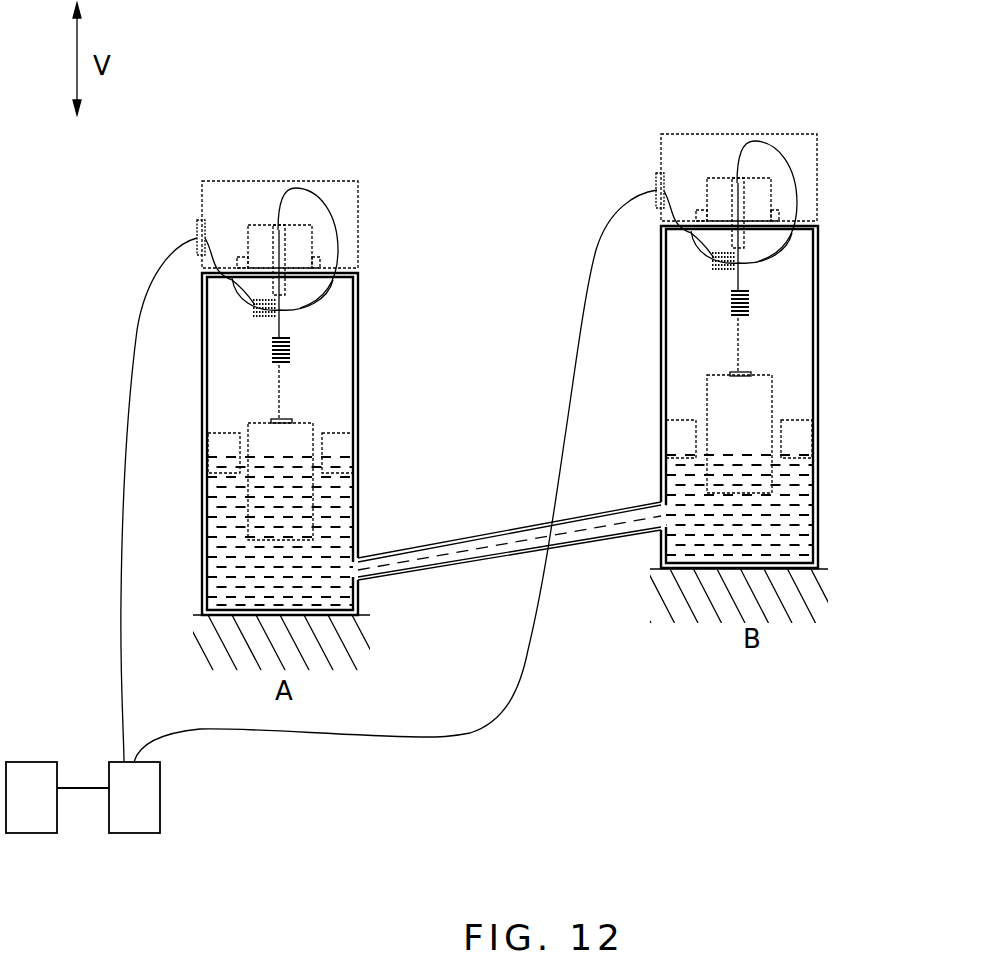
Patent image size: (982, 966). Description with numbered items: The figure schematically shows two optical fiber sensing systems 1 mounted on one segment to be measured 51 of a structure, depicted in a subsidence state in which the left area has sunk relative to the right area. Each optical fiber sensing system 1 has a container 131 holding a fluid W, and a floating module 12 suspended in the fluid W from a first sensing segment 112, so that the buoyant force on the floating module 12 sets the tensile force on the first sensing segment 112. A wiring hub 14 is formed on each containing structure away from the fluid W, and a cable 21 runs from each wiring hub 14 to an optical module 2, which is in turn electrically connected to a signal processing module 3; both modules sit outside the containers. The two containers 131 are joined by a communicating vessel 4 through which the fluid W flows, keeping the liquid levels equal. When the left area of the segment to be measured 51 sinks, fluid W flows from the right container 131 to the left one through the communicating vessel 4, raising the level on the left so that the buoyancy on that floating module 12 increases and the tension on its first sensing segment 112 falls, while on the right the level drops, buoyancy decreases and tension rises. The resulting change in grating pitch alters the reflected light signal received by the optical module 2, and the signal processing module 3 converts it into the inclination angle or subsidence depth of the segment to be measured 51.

The optical fiber sensing system 1 is at (262, 108).
The container 131 is at (358, 343).
The segment to be measured 51 is at (830, 600).
The wiring hub 14 is at (197, 228).
The first sensing segment 112 is at (270, 350).
The floating module 12 is at (307, 433).
The fluid W is at (356, 487).
The communicating vessel 4 is at (532, 540).
The cable 21 is at (126, 458).
The optical module 2 is at (135, 822).
The signal processing module 3 is at (28, 820).